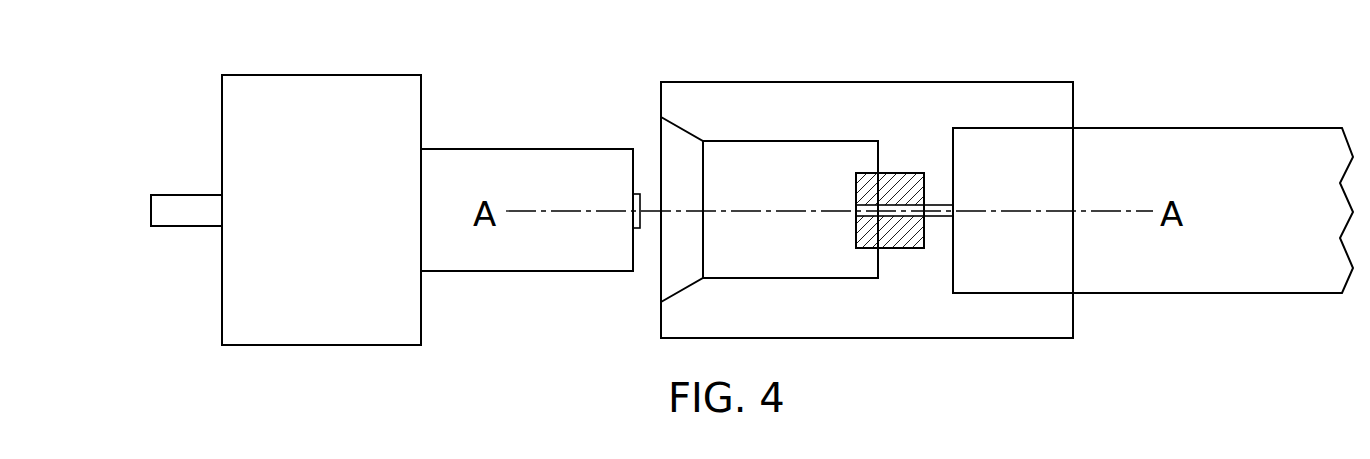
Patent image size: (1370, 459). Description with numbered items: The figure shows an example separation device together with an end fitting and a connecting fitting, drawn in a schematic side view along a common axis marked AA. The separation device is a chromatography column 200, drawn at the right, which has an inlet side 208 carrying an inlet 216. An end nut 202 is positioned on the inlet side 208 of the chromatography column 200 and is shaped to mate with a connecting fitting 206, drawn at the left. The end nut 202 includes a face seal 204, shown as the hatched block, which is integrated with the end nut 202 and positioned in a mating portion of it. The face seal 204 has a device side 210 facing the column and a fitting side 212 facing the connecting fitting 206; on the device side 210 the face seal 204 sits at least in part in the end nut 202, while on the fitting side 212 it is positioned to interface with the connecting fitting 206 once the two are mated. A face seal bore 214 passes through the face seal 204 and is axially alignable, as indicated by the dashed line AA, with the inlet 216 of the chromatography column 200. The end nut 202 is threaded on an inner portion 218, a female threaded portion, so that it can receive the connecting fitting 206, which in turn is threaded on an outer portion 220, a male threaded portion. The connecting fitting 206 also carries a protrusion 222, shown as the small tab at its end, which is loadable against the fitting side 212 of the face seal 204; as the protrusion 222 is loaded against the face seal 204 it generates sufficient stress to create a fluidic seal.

The chromatography column 200 is at (1155, 128).
The end nut 202 is at (866, 82).
The face seal 204 is at (897, 173).
The connecting fitting 206 is at (322, 75).
The inlet side 208 is at (947, 227).
The device side 210 is at (924, 232).
The fitting side 212 is at (855, 188).
The face seal bore 214 is at (855, 212).
The inlet 216 is at (953, 208).
The inner portion 218 is at (722, 141).
The outer portion 220 is at (527, 149).
The protrusion 222 is at (633, 198).